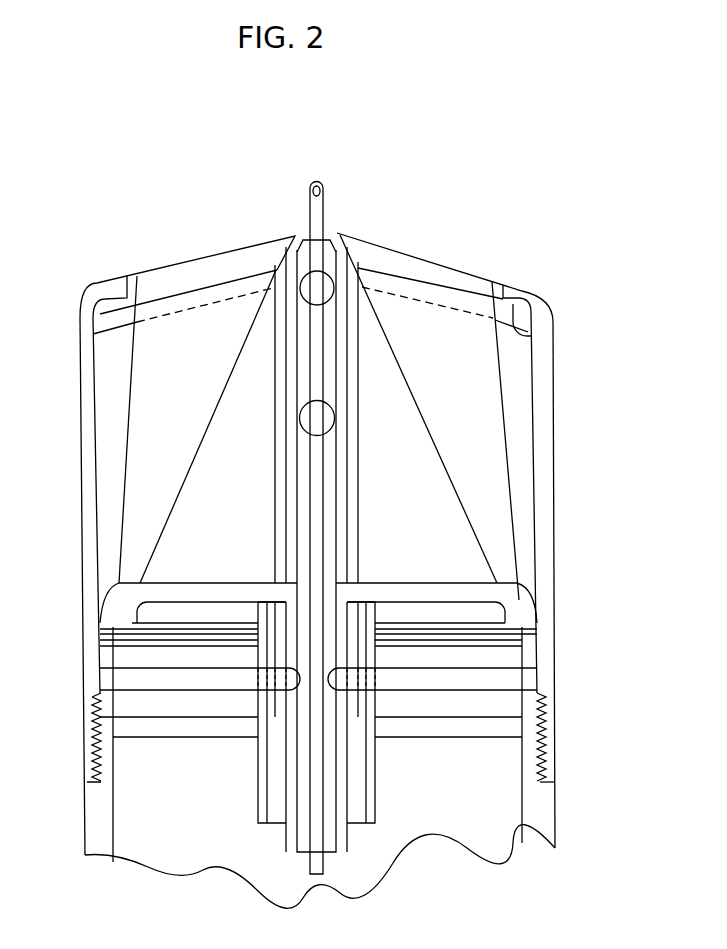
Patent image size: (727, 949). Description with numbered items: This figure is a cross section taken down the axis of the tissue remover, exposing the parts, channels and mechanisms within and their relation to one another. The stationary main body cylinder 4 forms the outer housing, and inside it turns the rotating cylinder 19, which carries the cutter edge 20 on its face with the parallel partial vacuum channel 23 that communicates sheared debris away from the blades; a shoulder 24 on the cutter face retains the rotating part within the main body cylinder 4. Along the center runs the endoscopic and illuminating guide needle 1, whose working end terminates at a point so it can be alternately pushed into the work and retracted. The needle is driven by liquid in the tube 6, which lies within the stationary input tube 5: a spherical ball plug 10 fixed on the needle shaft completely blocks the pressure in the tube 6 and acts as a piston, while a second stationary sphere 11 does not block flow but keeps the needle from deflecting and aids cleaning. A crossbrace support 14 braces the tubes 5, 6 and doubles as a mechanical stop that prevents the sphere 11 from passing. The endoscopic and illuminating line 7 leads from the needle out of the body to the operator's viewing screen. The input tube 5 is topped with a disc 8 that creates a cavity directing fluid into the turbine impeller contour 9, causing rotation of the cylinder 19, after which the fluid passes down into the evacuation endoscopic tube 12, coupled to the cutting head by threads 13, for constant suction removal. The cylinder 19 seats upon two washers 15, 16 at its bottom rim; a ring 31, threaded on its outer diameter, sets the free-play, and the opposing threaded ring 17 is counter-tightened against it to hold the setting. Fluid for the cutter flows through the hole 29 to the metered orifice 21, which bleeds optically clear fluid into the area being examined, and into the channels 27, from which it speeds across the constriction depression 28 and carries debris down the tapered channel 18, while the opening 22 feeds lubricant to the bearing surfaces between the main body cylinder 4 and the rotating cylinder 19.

The endoscopic and illuminating guide needle 1 is at (330, 209).
The stationary main body cylinder 4 is at (556, 508).
The input tube 5 is at (379, 818).
The tube 6 is at (349, 846).
The endoscopic and illuminating line 7 is at (324, 868).
The disc 8 is at (500, 599).
The turbine impeller contour 9 is at (116, 596).
The spherical ball plug 10 is at (309, 286).
The stationary sphere 11 is at (334, 403).
The endoscopic tube 12 is at (562, 808).
The threads 13 is at (538, 764).
The crossbrace support 14 is at (328, 692).
The washer 15 is at (128, 646).
The washer 16 is at (168, 642).
The opposing ring 17 is at (155, 740).
The channel 18 is at (156, 406).
The rotating cylinder 19 is at (110, 388).
The cutter edge 20 is at (467, 261).
The orifice 21 is at (307, 224).
The opening of the channel 22 is at (116, 322).
The partial vacuum channel 23 is at (183, 272).
The shoulder 24 is at (513, 320).
The channel 27 is at (393, 272).
The constriction depression 28 is at (216, 288).
The hole 29 is at (283, 488).
The ring 31 is at (513, 704).